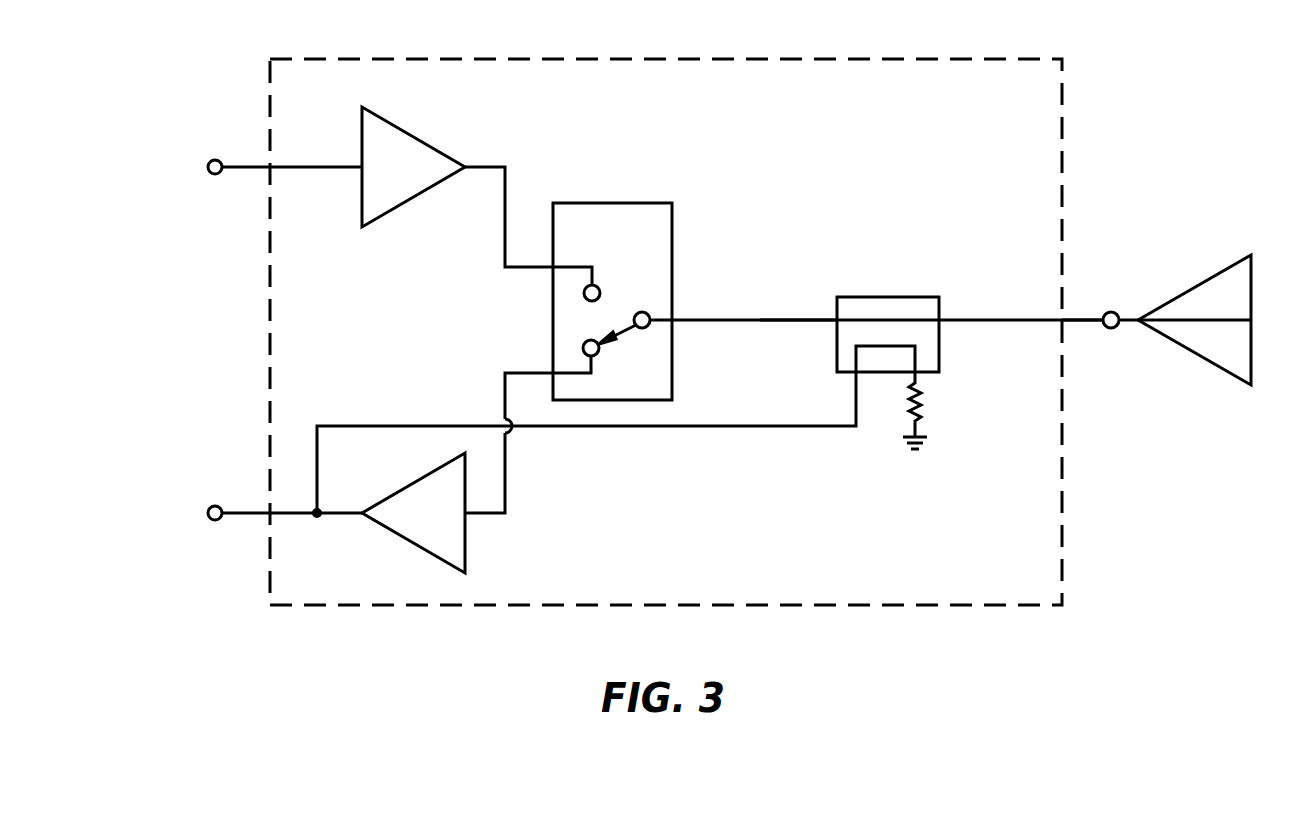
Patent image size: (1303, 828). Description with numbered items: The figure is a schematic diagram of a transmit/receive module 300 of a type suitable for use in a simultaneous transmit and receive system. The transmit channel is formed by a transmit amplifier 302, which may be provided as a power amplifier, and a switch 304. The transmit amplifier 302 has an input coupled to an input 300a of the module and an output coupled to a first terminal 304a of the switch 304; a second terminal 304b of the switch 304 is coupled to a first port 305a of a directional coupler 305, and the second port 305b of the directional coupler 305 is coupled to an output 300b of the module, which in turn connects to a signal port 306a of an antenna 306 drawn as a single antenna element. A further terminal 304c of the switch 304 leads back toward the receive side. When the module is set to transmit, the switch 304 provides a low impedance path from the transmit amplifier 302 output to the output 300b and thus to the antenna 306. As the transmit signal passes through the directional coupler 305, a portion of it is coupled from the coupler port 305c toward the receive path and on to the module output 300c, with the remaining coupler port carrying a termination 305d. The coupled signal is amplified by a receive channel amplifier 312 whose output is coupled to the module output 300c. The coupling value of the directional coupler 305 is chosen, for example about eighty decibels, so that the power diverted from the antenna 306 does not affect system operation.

The T/R module 300 is at (1036, 100).
The input 300a is at (244, 164).
The output 300b is at (1078, 323).
The output 300c is at (242, 515).
The transmit amplifier 302 is at (420, 179).
The switch 304 is at (631, 238).
The first terminal 304a is at (525, 270).
The second terminal 304b is at (698, 318).
The switch receive throw 304c is at (530, 372).
The directional coupler 305 is at (885, 285).
The first port 305a is at (808, 318).
The second port 305b is at (967, 318).
The coupler port 305c is at (855, 402).
The termination resistor 305d is at (918, 382).
The antenna 306 is at (1240, 352).
The signal port 306a is at (1130, 316).
The receive channel amplifier 312 is at (445, 526).